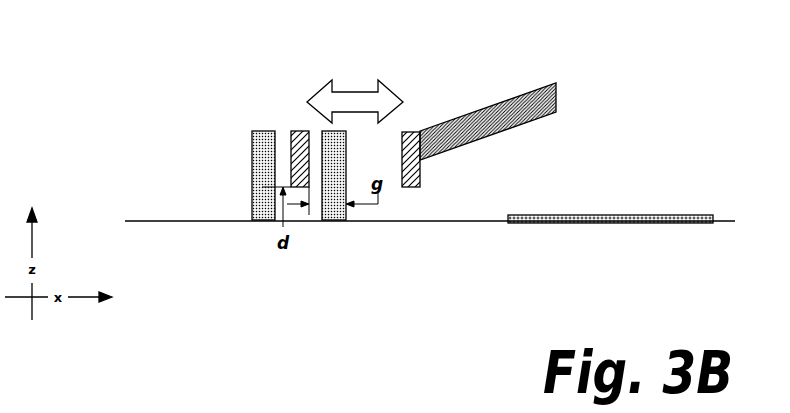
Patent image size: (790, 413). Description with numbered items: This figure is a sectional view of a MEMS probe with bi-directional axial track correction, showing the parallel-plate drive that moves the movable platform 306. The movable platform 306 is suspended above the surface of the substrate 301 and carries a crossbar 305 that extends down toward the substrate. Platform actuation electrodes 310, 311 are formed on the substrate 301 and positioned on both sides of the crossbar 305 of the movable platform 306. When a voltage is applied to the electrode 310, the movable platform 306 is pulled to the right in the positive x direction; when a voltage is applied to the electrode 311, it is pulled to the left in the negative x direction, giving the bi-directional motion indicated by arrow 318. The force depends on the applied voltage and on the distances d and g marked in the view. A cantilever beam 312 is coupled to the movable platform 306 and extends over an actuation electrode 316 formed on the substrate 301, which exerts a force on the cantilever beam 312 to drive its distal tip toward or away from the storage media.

The substrate 301 is at (397, 222).
The crossbar 305 is at (283, 126).
The movable platform 306 is at (414, 132).
The platform actuation electrode 310 is at (342, 223).
The platform actuation electrode 311 is at (254, 223).
The cantilever beam 312 is at (485, 118).
The actuation electrode 316 is at (610, 223).
The arrow 318 is at (355, 101).